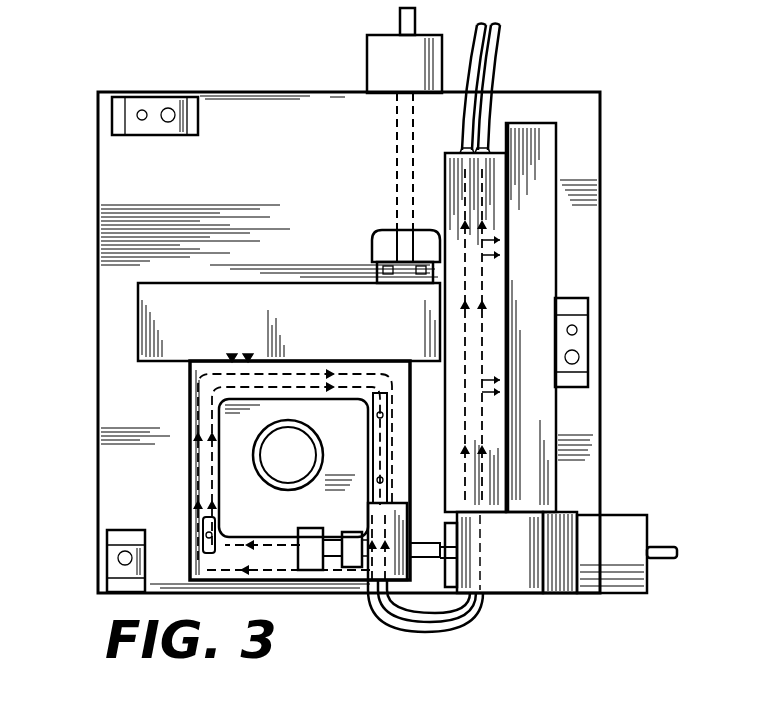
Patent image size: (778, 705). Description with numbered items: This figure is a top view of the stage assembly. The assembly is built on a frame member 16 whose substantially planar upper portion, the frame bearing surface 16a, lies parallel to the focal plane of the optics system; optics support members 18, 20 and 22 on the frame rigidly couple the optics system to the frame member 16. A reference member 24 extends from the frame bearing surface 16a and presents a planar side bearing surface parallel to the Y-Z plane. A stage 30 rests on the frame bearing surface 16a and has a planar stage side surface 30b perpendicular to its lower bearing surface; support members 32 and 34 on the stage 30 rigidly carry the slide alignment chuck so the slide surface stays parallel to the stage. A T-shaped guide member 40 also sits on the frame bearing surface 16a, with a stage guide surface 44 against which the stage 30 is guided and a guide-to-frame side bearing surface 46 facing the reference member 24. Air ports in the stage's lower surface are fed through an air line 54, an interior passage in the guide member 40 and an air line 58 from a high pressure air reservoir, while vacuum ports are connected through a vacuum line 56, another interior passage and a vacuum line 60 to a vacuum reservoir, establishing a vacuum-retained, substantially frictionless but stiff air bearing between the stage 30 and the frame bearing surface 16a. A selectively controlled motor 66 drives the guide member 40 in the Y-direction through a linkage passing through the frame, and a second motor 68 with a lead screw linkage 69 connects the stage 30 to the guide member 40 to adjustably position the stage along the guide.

The frame member 16 is at (97, 226).
The frame bearing surface 16a is at (282, 182).
The optics support member 18 is at (107, 560).
The optics support member 20 is at (140, 94).
The optics support member 22 is at (590, 342).
The reference member 24 is at (532, 288).
The stage 30 is at (203, 456).
The stage side surface 30b is at (232, 355).
The support member 32 is at (202, 533).
The support member 34 is at (375, 436).
The guide member 40 is at (490, 335).
The stage guide surface 44 is at (175, 364).
The guide-to-frame side bearing surface 46 is at (510, 448).
The air line 54 is at (420, 627).
The vacuum line 56 is at (430, 622).
The air line 58 is at (474, 33).
The vacuum line 60 is at (497, 63).
The motor 66 is at (406, 74).
The motor 68 is at (603, 514).
The lead screw linkage 69 is at (420, 498).